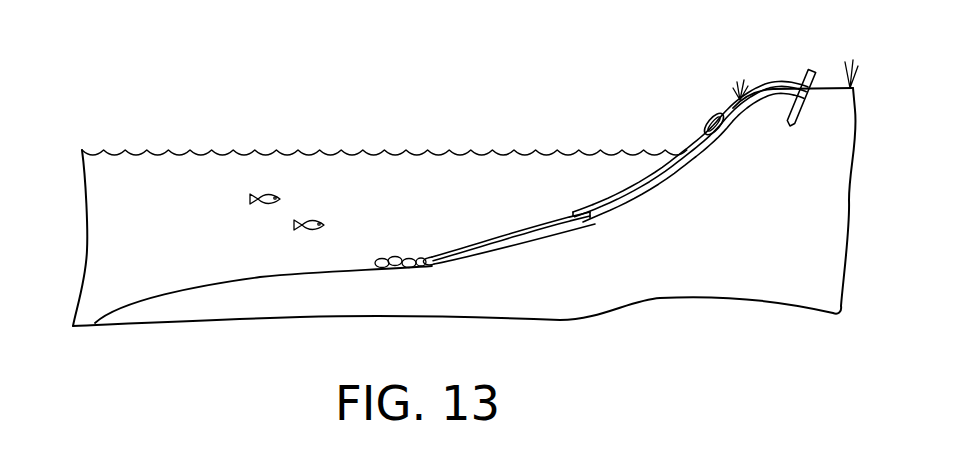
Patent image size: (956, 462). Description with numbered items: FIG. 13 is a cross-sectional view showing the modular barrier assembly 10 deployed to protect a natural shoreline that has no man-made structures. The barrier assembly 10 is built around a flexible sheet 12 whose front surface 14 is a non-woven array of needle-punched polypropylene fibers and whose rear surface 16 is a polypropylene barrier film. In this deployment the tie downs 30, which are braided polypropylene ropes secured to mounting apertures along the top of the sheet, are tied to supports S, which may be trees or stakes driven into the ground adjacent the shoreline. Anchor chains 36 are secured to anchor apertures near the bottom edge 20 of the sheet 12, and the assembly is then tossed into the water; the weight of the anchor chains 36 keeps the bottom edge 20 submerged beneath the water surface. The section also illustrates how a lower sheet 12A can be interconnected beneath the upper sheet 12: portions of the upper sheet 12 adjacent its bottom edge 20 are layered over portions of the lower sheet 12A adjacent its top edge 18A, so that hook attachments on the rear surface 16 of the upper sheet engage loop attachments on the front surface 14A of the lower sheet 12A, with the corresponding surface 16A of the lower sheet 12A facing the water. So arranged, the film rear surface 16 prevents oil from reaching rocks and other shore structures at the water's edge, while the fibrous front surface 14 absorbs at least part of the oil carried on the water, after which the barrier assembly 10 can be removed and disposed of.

The modular barrier assembly 10 is at (604, 182).
The flexible sheet 12 is at (603, 197).
The front surface 14 is at (652, 176).
The rear surface 16 is at (678, 166).
The lower sheet 12A is at (503, 231).
The front surface of lower sheet 14A is at (473, 242).
The lower wall of lower section 16A is at (493, 248).
The top edge of lower sheet 18A is at (590, 218).
The bottom edge 20 is at (568, 214).
The tie downs 30 is at (727, 100).
The anchor chains 36 is at (397, 255).
The supports S is at (810, 70).